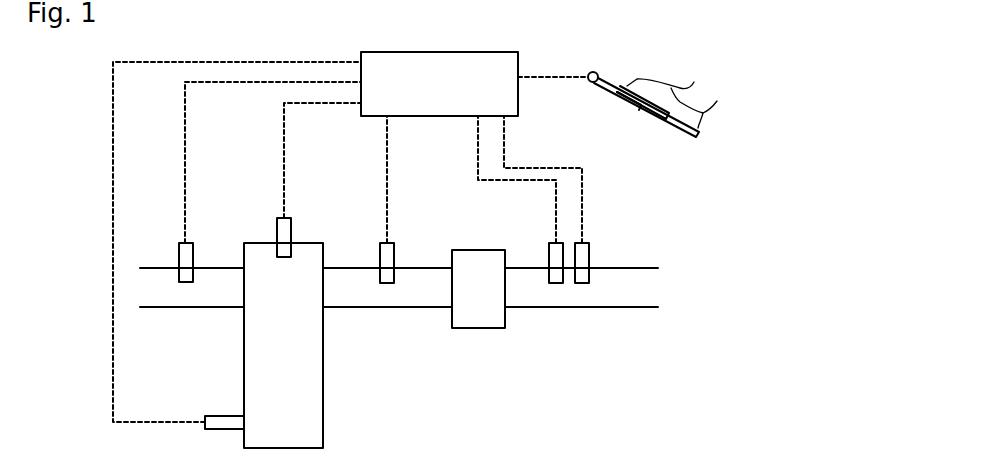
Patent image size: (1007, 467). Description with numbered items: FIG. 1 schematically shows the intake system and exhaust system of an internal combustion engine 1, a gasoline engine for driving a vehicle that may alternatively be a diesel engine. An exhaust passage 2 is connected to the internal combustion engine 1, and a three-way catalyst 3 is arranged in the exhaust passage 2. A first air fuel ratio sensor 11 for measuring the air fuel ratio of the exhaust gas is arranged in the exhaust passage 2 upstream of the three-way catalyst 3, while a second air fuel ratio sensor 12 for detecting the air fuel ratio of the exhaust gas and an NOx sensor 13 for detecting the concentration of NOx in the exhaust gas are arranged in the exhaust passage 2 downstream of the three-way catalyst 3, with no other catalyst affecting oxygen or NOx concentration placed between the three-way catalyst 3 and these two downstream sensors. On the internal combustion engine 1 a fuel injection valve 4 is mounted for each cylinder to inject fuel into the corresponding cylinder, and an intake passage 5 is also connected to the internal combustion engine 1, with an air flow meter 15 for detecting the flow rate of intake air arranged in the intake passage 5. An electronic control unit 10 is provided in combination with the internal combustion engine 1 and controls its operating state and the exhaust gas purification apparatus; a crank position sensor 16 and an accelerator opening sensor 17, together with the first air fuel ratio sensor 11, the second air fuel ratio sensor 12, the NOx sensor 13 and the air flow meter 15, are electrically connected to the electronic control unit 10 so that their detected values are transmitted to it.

The internal combustion engine 1 is at (323, 423).
The exhaust passage 2 is at (374, 309).
The three-way catalyst 3 is at (473, 315).
The fuel injection valve 4 is at (277, 225).
The intake passage 5 is at (188, 308).
The electronic control unit 10 is at (361, 116).
The first air fuel ratio sensor 11 is at (379, 255).
The second air fuel ratio sensor 12 is at (548, 250).
The NOx sensor 13 is at (590, 255).
The air flow meter 15 is at (178, 248).
The crank position sensor 16 is at (225, 416).
The accelerator opening sensor 17 is at (588, 81).